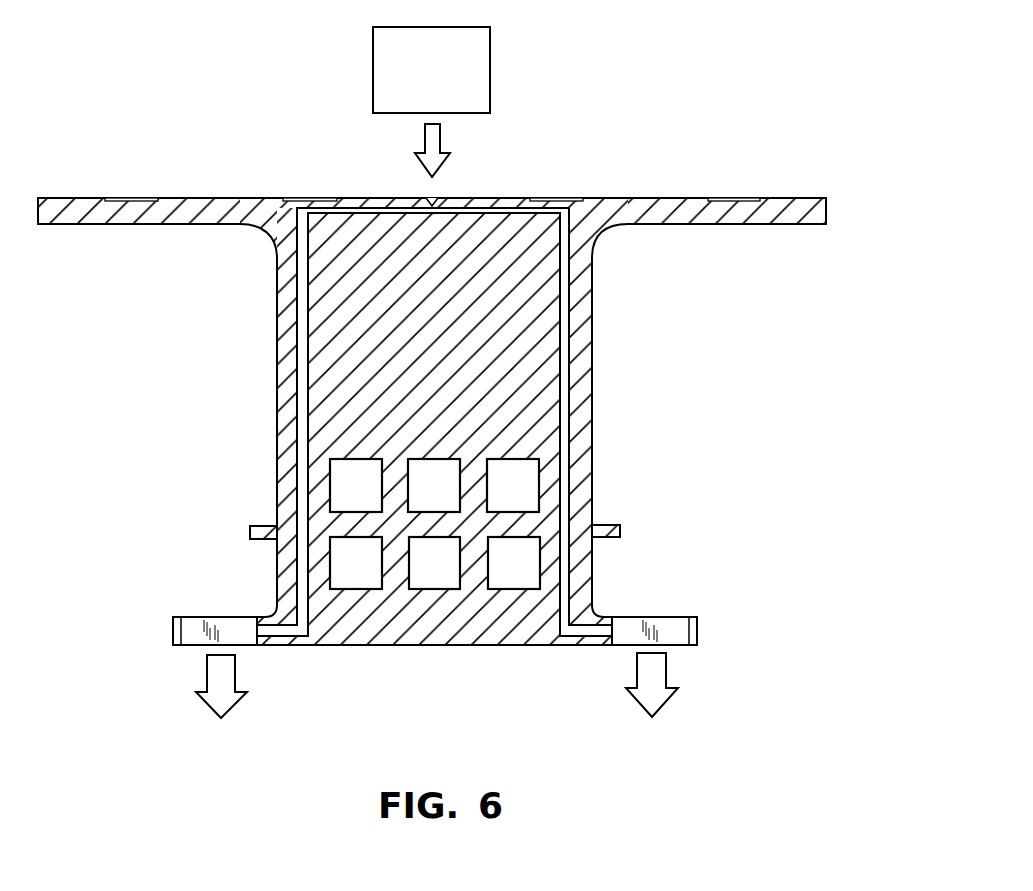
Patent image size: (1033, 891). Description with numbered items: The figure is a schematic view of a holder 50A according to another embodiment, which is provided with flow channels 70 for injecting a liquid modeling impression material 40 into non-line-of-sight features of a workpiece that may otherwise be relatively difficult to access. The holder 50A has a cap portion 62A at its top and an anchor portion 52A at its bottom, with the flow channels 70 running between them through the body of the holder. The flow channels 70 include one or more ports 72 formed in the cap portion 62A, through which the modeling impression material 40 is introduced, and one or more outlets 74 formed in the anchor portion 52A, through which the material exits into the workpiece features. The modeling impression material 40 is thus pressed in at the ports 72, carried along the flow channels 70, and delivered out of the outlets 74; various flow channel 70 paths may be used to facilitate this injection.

The modeling impression material 40 is at (443, 77).
The holder 50A is at (432, 371).
The anchor portion 52A is at (477, 429).
The cap portion 62A is at (432, 378).
The flow channels 70 is at (277, 385).
The ports 72 is at (432, 200).
The outlets 74 is at (195, 617).